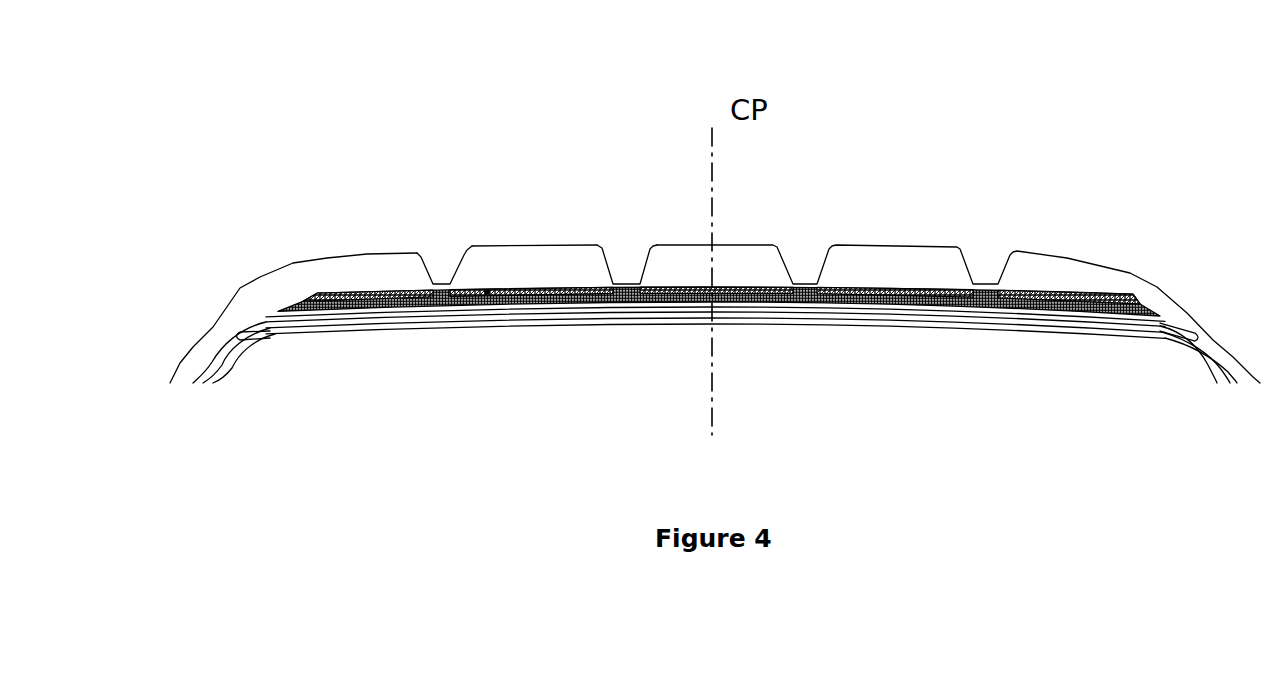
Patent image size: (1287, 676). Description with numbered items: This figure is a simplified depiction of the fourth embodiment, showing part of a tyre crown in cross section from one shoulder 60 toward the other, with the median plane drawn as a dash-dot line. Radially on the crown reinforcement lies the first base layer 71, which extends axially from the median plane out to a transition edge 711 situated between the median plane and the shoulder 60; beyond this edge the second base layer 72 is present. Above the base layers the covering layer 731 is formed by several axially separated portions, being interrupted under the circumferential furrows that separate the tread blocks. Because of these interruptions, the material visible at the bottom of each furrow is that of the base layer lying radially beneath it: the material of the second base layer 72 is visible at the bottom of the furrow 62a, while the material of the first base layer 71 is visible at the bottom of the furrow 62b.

The shoulder 60 is at (234, 284).
The furrow 62a is at (446, 267).
The furrow 62b is at (630, 262).
The first base layer 71 is at (681, 307).
The transition edge 711 is at (539, 310).
The second base layer 72 is at (428, 308).
The covering layer 731 is at (489, 306).